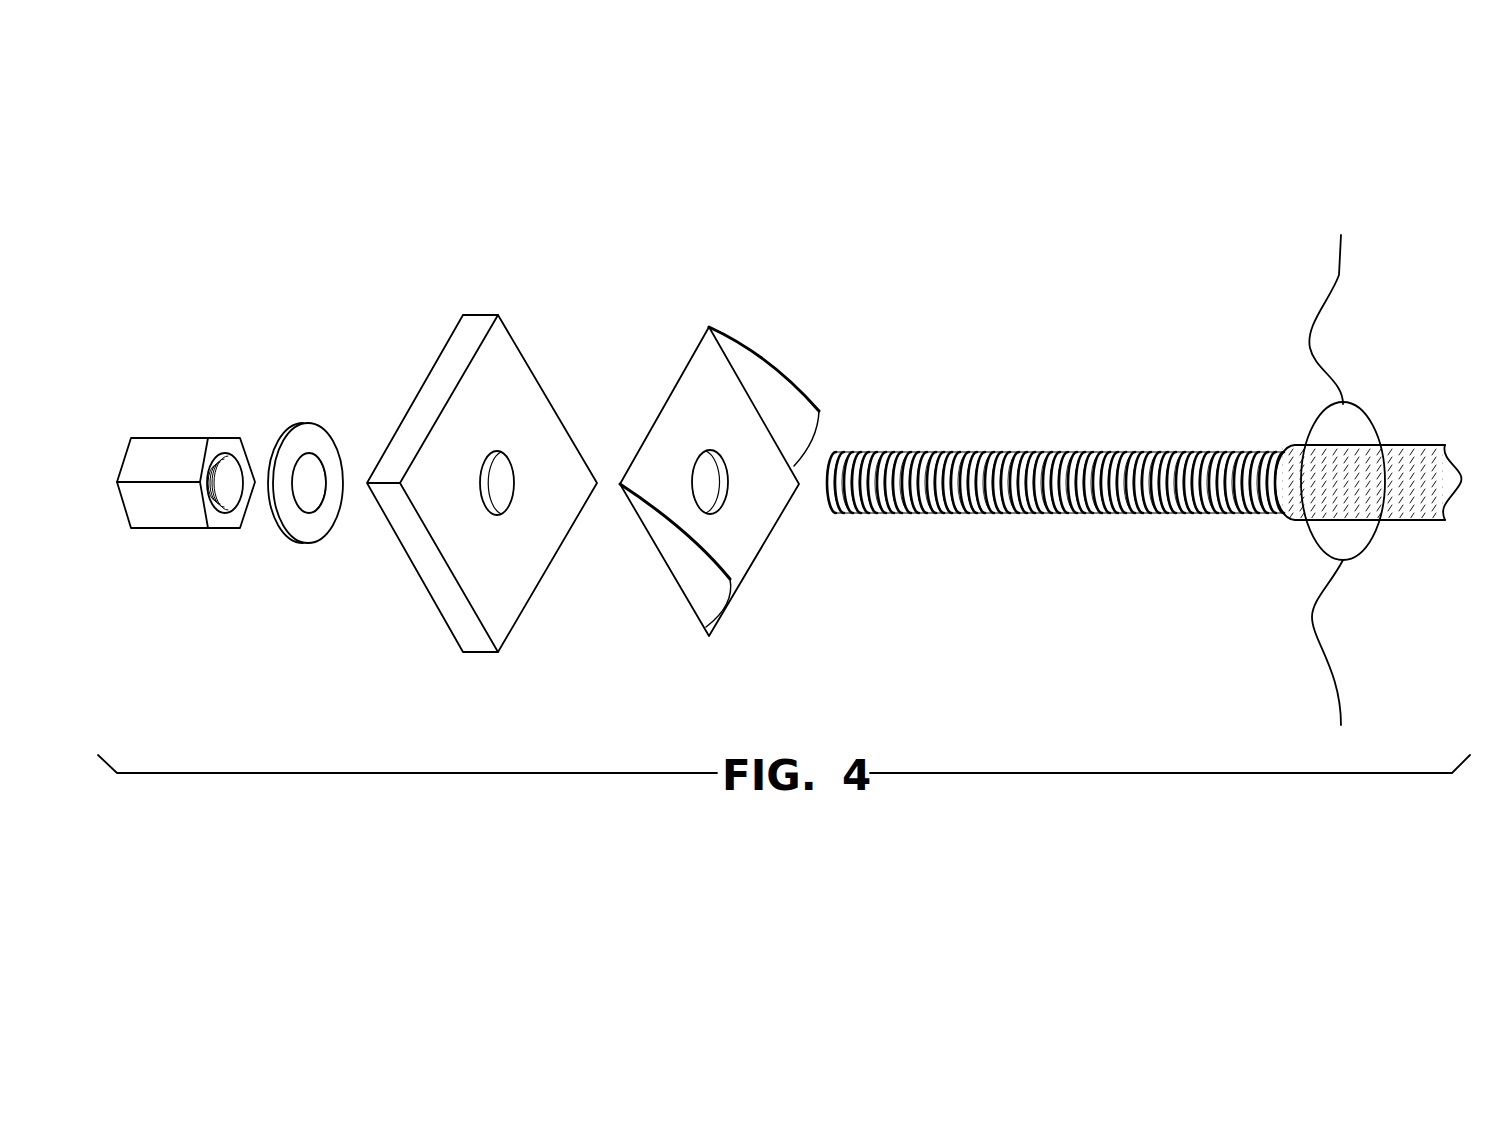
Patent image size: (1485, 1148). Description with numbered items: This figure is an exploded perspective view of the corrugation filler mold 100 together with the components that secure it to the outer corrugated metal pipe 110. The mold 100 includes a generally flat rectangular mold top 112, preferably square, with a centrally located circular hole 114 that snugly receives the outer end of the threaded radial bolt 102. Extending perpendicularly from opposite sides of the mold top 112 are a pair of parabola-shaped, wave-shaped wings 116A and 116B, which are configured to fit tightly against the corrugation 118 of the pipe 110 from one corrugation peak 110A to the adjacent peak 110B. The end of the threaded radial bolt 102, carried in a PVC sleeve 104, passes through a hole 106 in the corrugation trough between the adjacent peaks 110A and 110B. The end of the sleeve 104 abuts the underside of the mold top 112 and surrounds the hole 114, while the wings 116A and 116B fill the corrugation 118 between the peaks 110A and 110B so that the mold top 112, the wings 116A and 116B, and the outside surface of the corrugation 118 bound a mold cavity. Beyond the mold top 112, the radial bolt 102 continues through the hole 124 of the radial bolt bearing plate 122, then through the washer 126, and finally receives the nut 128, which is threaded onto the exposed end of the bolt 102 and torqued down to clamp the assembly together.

The corrugation filler mold 100 is at (722, 430).
The threaded radial bolt 102 is at (1063, 513).
The PVC sleeve 104 is at (1412, 519).
The hole 106 is at (1356, 419).
The outer corrugated metal pipe 110 is at (1292, 470).
The corrugation peak 110A is at (1310, 335).
The corrugation peak 110B is at (1308, 621).
The mold top 112 is at (722, 489).
The circular hole 114 is at (717, 486).
The parabola-shaped wing 116A is at (785, 398).
The parabola-shaped wing 116B is at (680, 570).
The corrugation 118 is at (1318, 592).
The radial bolt bearing plate 122 is at (471, 475).
The hole 124 is at (495, 498).
The washer 126 is at (305, 432).
The nut 128 is at (162, 447).